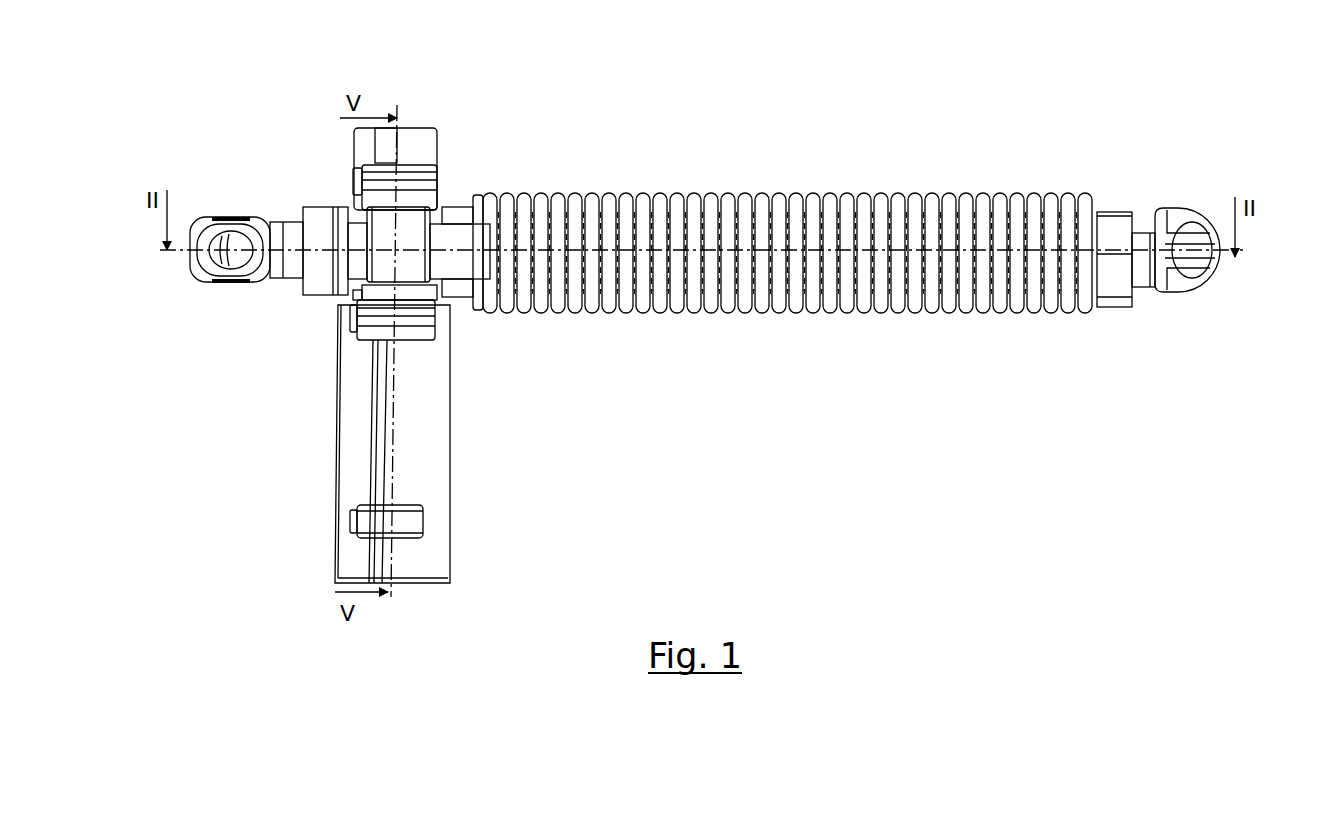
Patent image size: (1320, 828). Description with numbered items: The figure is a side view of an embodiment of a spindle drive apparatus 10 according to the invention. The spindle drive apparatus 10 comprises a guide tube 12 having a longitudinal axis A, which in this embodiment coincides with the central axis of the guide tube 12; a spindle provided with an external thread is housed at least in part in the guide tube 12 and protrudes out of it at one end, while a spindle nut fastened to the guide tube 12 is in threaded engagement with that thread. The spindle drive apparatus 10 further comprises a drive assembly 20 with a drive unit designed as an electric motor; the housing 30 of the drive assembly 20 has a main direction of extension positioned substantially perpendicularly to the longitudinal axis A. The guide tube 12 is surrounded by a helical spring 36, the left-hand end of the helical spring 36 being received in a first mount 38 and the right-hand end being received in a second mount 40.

The spindle drive apparatus 10 is at (247, 127).
The guide tube 12 is at (568, 217).
The drive assembly 20 is at (448, 560).
The housing 30 is at (435, 408).
The helical spring 36 is at (778, 203).
The first mount 38 is at (453, 210).
The second mount 40 is at (1115, 225).
The longitudinal axis A is at (173, 250).